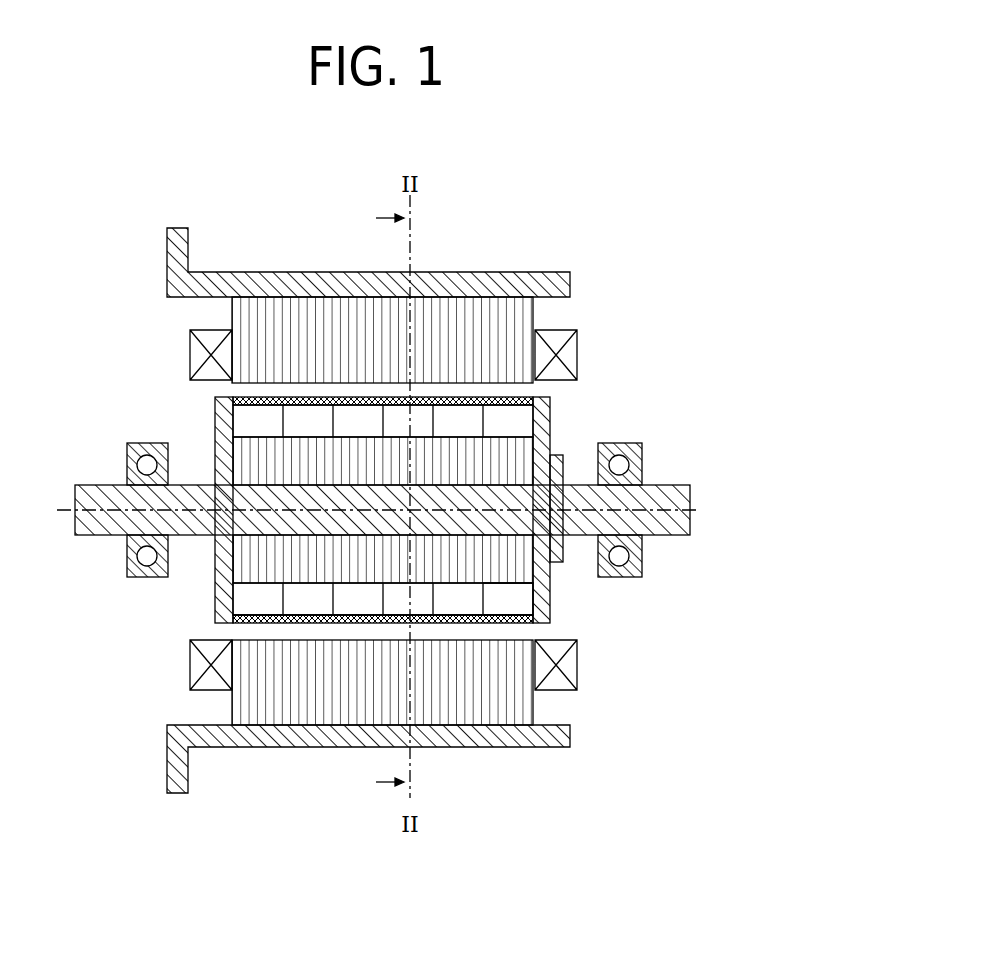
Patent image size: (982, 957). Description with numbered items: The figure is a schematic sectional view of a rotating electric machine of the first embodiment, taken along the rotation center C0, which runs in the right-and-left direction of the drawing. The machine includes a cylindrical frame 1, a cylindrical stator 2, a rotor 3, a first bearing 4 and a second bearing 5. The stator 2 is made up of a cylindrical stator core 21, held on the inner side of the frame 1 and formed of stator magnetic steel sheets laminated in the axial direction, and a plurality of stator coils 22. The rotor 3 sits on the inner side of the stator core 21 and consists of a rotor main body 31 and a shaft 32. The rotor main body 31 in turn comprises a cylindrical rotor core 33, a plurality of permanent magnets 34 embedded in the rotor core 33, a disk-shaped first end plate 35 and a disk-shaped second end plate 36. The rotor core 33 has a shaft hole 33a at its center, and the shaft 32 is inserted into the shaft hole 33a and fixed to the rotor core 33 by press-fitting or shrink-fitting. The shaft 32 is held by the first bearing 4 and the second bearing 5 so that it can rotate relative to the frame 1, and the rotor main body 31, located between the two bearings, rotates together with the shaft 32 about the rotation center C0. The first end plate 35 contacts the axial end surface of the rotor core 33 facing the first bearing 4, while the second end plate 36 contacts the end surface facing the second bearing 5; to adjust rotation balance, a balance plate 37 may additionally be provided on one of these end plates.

The frame 1 is at (335, 272).
The stator 2 is at (457, 506).
The stator core 21 is at (533, 318).
The stator coils 22 is at (425, 510).
The rotor 3 is at (450, 569).
The rotor main body 31 is at (550, 400).
The shaft 32 is at (653, 478).
The rotor core 33 is at (453, 573).
The shaft hole 33a is at (502, 627).
The permanent magnets 34 is at (518, 602).
The first end plate 35 is at (550, 593).
The second end plate 36 is at (215, 420).
The balance plate 37 is at (563, 557).
The first bearing 4 is at (642, 560).
The second bearing 5 is at (137, 443).
The rotation center C0 is at (700, 508).